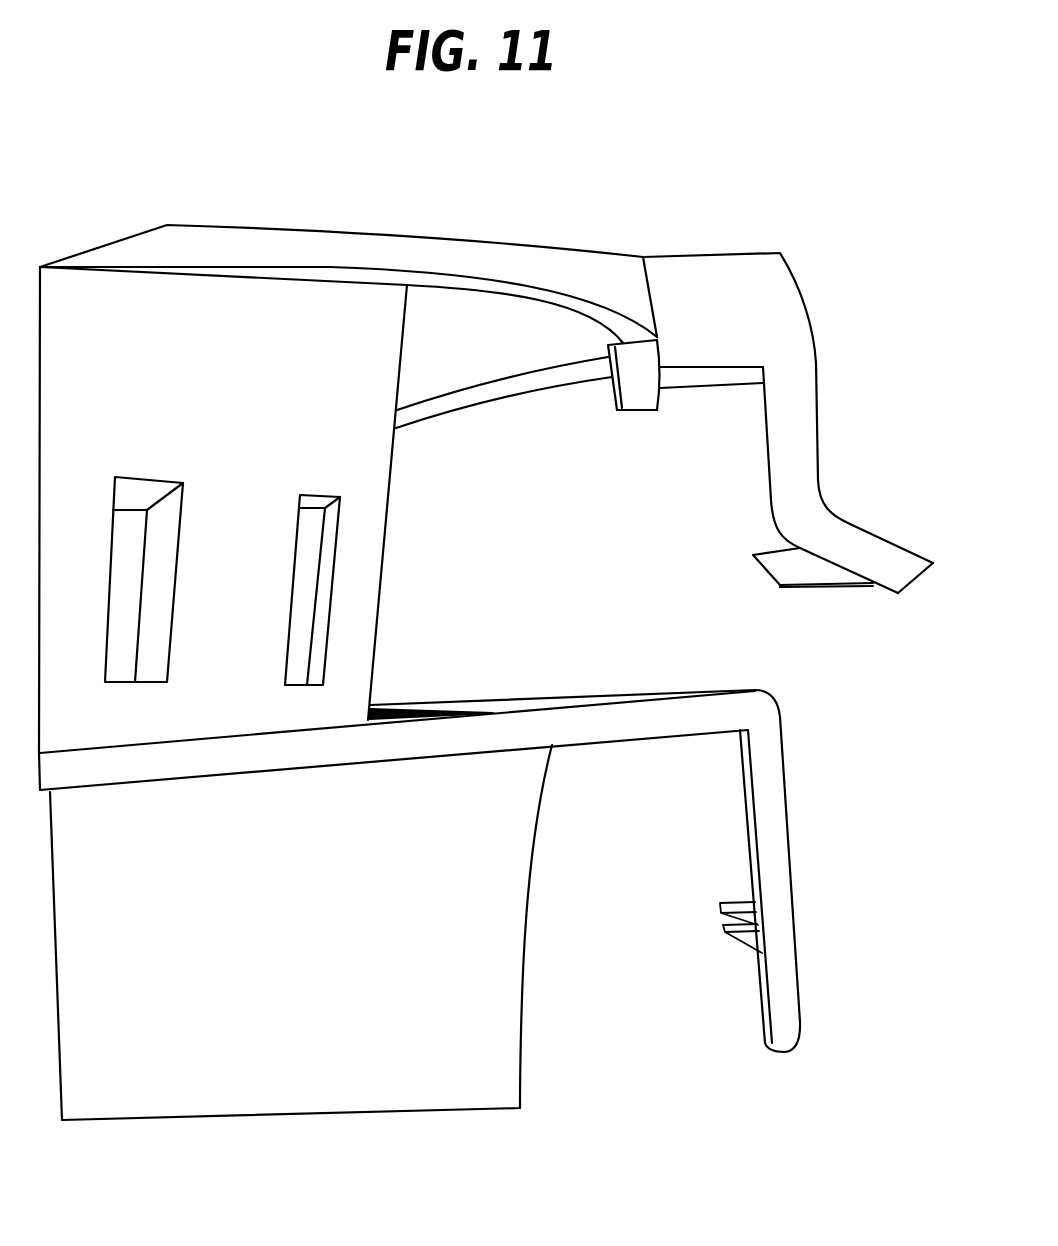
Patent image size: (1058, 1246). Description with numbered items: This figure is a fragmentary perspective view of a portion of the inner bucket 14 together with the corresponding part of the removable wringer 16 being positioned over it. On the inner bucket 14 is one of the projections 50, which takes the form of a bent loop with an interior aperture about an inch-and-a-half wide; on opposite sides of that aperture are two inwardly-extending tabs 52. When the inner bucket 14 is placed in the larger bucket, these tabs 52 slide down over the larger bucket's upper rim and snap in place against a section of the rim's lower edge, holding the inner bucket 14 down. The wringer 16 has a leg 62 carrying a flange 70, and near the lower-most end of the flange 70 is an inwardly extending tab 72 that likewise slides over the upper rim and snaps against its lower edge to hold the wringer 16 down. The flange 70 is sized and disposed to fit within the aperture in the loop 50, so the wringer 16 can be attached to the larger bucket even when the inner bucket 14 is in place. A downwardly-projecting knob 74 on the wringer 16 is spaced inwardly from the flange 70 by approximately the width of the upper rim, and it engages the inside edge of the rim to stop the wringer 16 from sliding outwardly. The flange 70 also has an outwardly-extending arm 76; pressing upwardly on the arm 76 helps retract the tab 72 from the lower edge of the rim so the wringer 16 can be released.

The inner bucket 14 is at (342, 912).
The removable wringer 16 is at (235, 393).
The projection 50 is at (697, 698).
The inwardly-extending tabs 52 is at (733, 900).
The leg 62 is at (722, 268).
The flange 70 is at (808, 417).
The inwardly extending tab 72 is at (785, 567).
The downwardly-projecting knob 74 is at (630, 382).
The outwardly-extending arm 76 is at (913, 578).